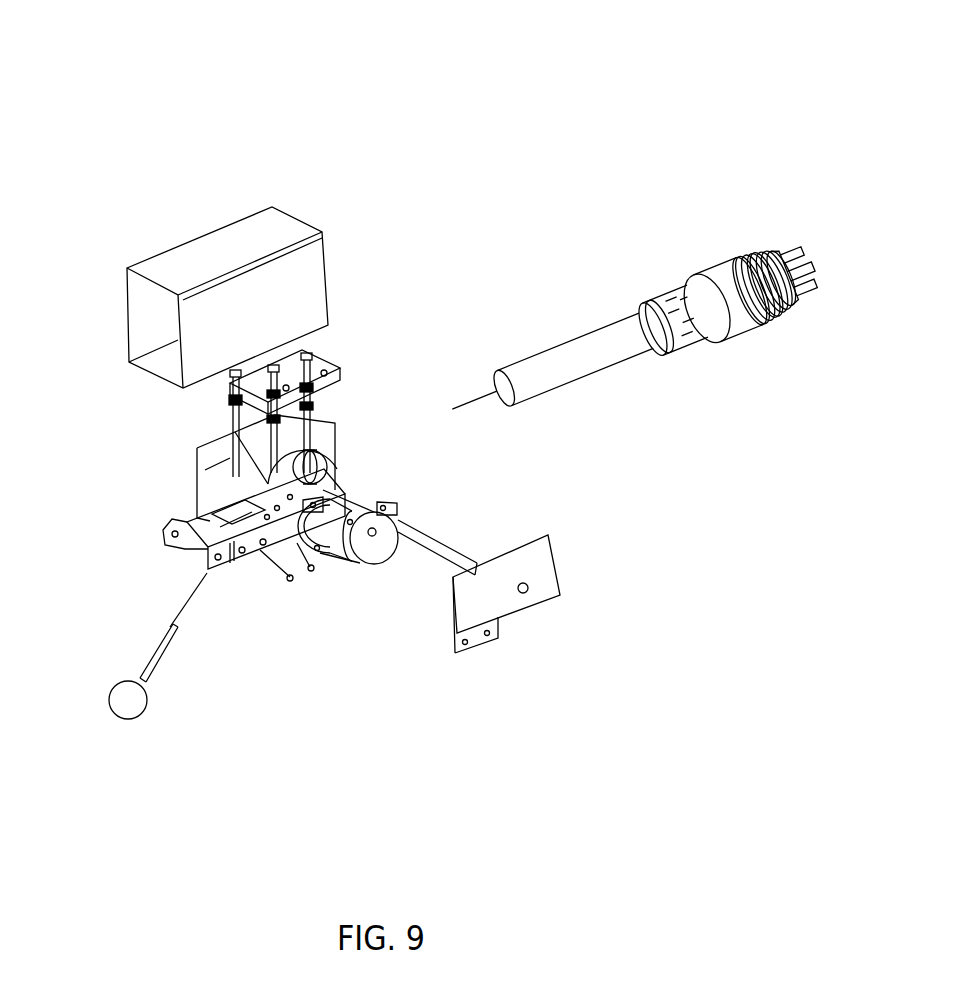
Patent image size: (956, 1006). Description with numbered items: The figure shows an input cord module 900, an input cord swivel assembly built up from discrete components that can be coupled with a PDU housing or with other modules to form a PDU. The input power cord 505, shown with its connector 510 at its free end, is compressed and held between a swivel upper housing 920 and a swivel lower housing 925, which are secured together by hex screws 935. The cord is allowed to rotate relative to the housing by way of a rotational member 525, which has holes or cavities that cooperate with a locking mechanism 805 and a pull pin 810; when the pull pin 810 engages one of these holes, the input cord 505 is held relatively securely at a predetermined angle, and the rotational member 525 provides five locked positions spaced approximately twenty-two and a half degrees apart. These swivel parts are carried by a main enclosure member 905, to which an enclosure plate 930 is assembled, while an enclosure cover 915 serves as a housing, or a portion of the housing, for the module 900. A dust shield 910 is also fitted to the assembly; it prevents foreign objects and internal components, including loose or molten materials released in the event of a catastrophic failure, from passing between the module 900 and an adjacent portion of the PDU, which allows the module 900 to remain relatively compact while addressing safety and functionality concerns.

The input cord module 900 is at (713, 68).
The enclosure cover 915 is at (207, 240).
The hex screws 935 is at (308, 353).
The swivel upper housing 920 is at (313, 385).
The dust shield 910 is at (230, 448).
The main enclosure member 905 is at (200, 452).
The rotational member 525 is at (328, 473).
The locking mechanism 805 is at (180, 523).
The pull pin 810 is at (150, 652).
The swivel lower housing 925 is at (362, 558).
The enclosure plate 930 is at (555, 547).
The input power cord 505 is at (627, 325).
The connector 510 is at (735, 252).